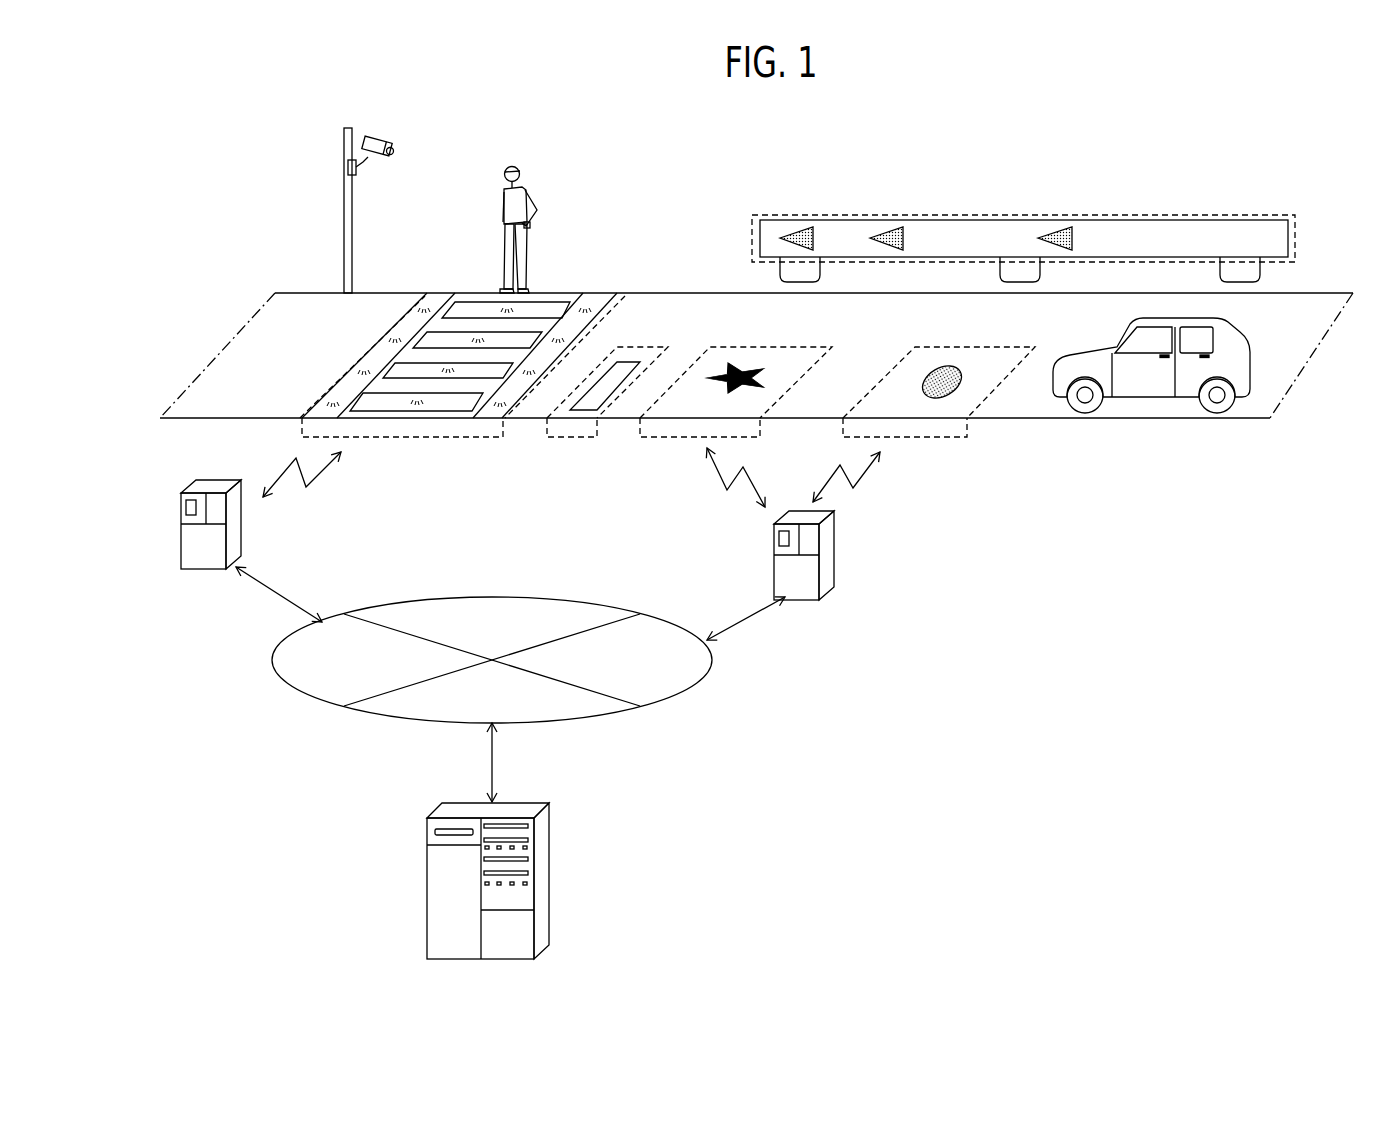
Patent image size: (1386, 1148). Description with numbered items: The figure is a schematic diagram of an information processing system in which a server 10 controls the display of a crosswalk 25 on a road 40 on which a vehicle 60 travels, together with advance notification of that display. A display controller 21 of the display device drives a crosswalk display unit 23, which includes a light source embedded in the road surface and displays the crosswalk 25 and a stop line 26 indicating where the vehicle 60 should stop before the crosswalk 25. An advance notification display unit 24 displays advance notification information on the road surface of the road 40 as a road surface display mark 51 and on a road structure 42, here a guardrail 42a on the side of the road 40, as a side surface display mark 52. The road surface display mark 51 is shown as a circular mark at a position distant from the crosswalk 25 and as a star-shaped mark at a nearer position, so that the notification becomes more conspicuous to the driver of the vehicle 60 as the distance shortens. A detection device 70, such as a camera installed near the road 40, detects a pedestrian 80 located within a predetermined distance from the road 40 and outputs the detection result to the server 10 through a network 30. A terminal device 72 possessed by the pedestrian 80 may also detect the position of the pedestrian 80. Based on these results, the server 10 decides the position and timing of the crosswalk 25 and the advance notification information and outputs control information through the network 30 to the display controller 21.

The server 10 is at (549, 876).
The display controller 21 is at (181, 541).
The crosswalk display unit 23 is at (481, 425).
The advance notification display unit 24 is at (675, 438).
The crosswalk 25 is at (437, 299).
The stop line 26 is at (626, 362).
The network 30 is at (489, 598).
The road 40 is at (298, 339).
The road structure 42 is at (1024, 221).
The guardrail 42a is at (1148, 237).
The road surface display mark 51 is at (748, 369).
The side surface display mark 52 is at (803, 226).
The vehicle 60 is at (1232, 343).
The detection device 70 is at (372, 137).
The terminal device 72 is at (529, 228).
The pedestrian 80 is at (527, 187).